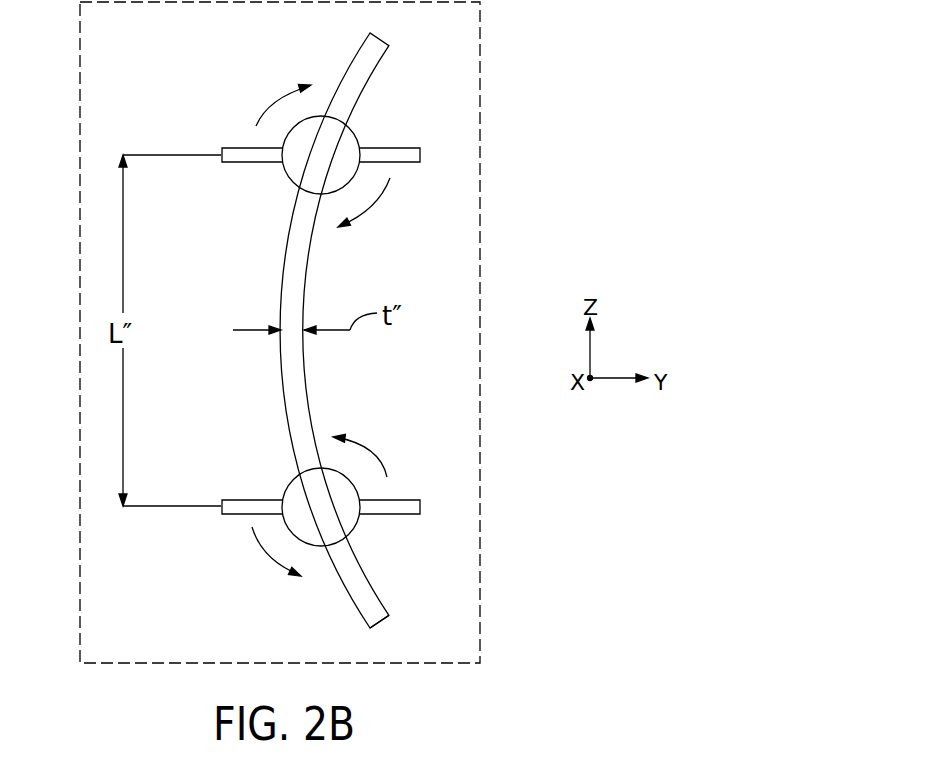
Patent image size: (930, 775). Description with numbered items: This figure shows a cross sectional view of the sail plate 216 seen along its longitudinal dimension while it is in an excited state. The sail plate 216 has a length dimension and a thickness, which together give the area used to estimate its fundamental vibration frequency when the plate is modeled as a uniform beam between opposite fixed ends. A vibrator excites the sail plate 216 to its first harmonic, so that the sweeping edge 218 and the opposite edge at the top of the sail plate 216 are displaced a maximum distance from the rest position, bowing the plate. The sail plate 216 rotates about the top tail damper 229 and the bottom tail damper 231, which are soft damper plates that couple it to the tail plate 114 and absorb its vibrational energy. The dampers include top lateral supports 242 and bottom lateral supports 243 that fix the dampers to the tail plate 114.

The tail plate 114 is at (451, 371).
The sail plate 216 is at (505, 98).
The sweeping edge 218 is at (384, 618).
The top tail damper 229 is at (348, 132).
The bottom tail damper 231 is at (343, 470).
The top lateral supports 242 is at (410, 158).
The bottom lateral supports 243 is at (412, 510).